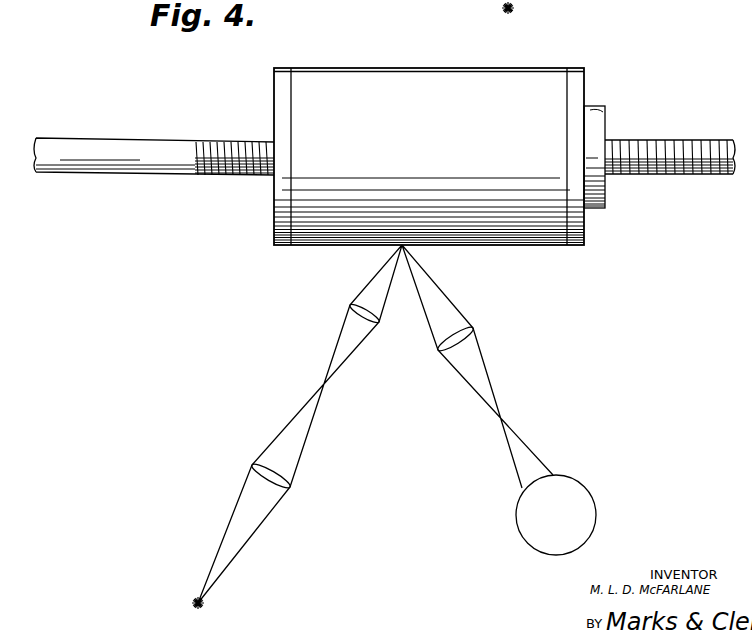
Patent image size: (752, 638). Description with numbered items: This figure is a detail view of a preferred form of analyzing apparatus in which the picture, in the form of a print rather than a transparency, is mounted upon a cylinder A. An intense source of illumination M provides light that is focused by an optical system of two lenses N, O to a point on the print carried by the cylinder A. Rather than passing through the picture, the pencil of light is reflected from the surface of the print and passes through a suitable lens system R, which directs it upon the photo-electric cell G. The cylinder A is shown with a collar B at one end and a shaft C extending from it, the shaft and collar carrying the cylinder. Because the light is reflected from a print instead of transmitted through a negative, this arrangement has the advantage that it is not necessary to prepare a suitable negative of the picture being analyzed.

The rotating drum A is at (309, 156).
The collar B is at (606, 109).
The threaded shaft C is at (661, 178).
The source of illumination M is at (366, 308).
The lens N is at (280, 479).
The lens O is at (370, 319).
The lens system R is at (465, 335).
The photo-electric cell G is at (537, 552).